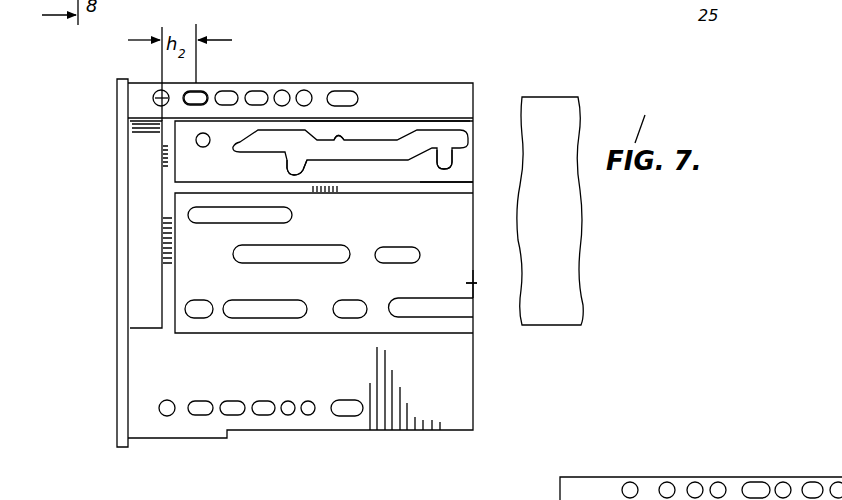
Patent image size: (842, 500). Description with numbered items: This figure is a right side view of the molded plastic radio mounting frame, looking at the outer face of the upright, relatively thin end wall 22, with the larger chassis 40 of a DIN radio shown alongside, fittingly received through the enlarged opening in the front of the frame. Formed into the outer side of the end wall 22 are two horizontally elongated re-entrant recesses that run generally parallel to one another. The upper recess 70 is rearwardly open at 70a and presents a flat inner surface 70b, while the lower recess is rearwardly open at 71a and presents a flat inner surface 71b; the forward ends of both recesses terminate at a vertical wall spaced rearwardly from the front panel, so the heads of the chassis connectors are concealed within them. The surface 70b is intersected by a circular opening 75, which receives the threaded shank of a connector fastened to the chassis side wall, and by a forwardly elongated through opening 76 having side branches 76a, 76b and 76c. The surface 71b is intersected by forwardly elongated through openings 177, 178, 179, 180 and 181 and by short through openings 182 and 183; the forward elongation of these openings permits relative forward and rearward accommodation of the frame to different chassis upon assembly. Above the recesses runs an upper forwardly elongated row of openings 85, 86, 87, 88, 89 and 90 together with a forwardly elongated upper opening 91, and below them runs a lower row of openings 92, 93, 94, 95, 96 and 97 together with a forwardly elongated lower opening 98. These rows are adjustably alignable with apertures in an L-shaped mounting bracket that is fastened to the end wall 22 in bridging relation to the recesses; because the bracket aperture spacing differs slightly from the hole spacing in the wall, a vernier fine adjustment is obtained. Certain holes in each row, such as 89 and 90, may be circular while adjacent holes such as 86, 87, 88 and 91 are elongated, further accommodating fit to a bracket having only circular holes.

The end wall 22 is at (157, 452).
The larger chassis 40 is at (567, 216).
The re-entrant recess 70 is at (176, 169).
The rearwardly open end of recess 70a is at (460, 173).
The inner surface of recess 70b is at (381, 128).
The rearwardly open end of recess 71a is at (478, 287).
The inner surface of recess 71b is at (318, 259).
The opening 75 is at (196, 140).
The forwardly elongated through opening 76 is at (400, 152).
The side branch 76a is at (445, 160).
The side branch 76b is at (348, 135).
The side branch 76c is at (290, 170).
The opening 85 is at (152, 93).
The opening 86 is at (202, 101).
The opening 87 is at (198, 92).
The opening 88 is at (229, 91).
The opening 89 is at (260, 91).
The opening 90 is at (283, 90).
The forwardly elongated upper opening 91 is at (340, 90).
The opening 92 is at (158, 408).
The opening 93 is at (203, 415).
The opening 94 is at (234, 415).
The opening 95 is at (263, 415).
The opening 96 is at (287, 401).
The opening 97 is at (310, 401).
The forwardly elongated lower opening 98 is at (347, 416).
The through opening 177 is at (190, 214).
The through opening 178 is at (238, 253).
The through opening 179 is at (410, 253).
The through opening 180 is at (262, 304).
The through opening 181 is at (422, 319).
The short through opening 182 is at (198, 303).
The short through opening 183 is at (350, 303).